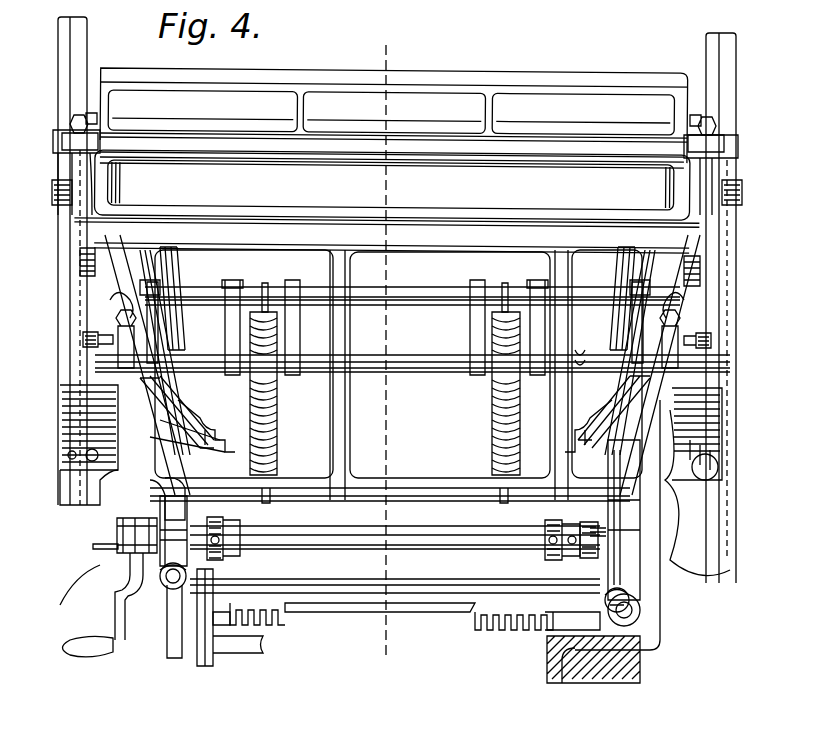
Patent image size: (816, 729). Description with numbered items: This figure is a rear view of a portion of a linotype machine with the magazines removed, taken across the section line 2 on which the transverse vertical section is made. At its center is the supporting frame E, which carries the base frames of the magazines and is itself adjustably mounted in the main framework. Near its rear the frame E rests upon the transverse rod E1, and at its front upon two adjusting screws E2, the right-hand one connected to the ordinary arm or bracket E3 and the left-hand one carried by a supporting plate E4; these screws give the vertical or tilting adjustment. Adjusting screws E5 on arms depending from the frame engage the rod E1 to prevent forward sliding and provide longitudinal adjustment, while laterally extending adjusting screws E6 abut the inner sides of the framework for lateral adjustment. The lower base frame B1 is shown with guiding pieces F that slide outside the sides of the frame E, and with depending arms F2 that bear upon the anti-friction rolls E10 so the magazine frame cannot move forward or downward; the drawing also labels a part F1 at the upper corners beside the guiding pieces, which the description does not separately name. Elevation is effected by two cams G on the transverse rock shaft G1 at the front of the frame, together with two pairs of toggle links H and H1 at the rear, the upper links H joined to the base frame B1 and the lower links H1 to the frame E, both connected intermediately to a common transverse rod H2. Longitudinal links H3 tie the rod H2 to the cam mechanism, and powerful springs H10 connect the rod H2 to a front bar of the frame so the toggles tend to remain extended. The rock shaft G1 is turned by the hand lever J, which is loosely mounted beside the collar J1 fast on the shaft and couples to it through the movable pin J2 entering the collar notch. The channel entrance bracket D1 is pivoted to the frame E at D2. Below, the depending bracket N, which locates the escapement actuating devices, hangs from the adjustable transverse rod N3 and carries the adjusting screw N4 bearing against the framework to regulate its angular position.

The section line 2— 2 is at (385, 351).
The supporting bracket of the channel entrance D1 is at (596, 80).
The pivotal connection D2 is at (750, 190).
The lower base frame B1 is at (118, 184).
The guiding pieces F is at (78, 257).
The clamping bolt F1 is at (746, 110).
The depending lugs or arms F2 is at (590, 442).
The upper toggle link H is at (168, 276).
The lower toggle link H1 is at (160, 330).
The transverse toggle rod H2 is at (308, 288).
The longitudinal links H3 is at (573, 394).
The springs H10 is at (274, 428).
The supporting frame E is at (152, 463).
The transverse rod E1 is at (442, 378).
The adjusting screws E2 is at (670, 597).
The arm or bracket E3 is at (176, 645).
The supporting plate E4 is at (642, 616).
The adjusting screws E5 is at (690, 312).
The lateral adjusting screws E6 is at (746, 302).
The anti-friction rolls E10 is at (686, 542).
The elevating cams G is at (220, 519).
The rock shaft G1 is at (326, 536).
The hand lever J is at (112, 607).
The collar J1 is at (160, 512).
The longitudinally movable pin J2 is at (110, 560).
The depending bracket N is at (206, 610).
The transverse rod N3 is at (314, 590).
The adjusting screw N4 is at (538, 592).